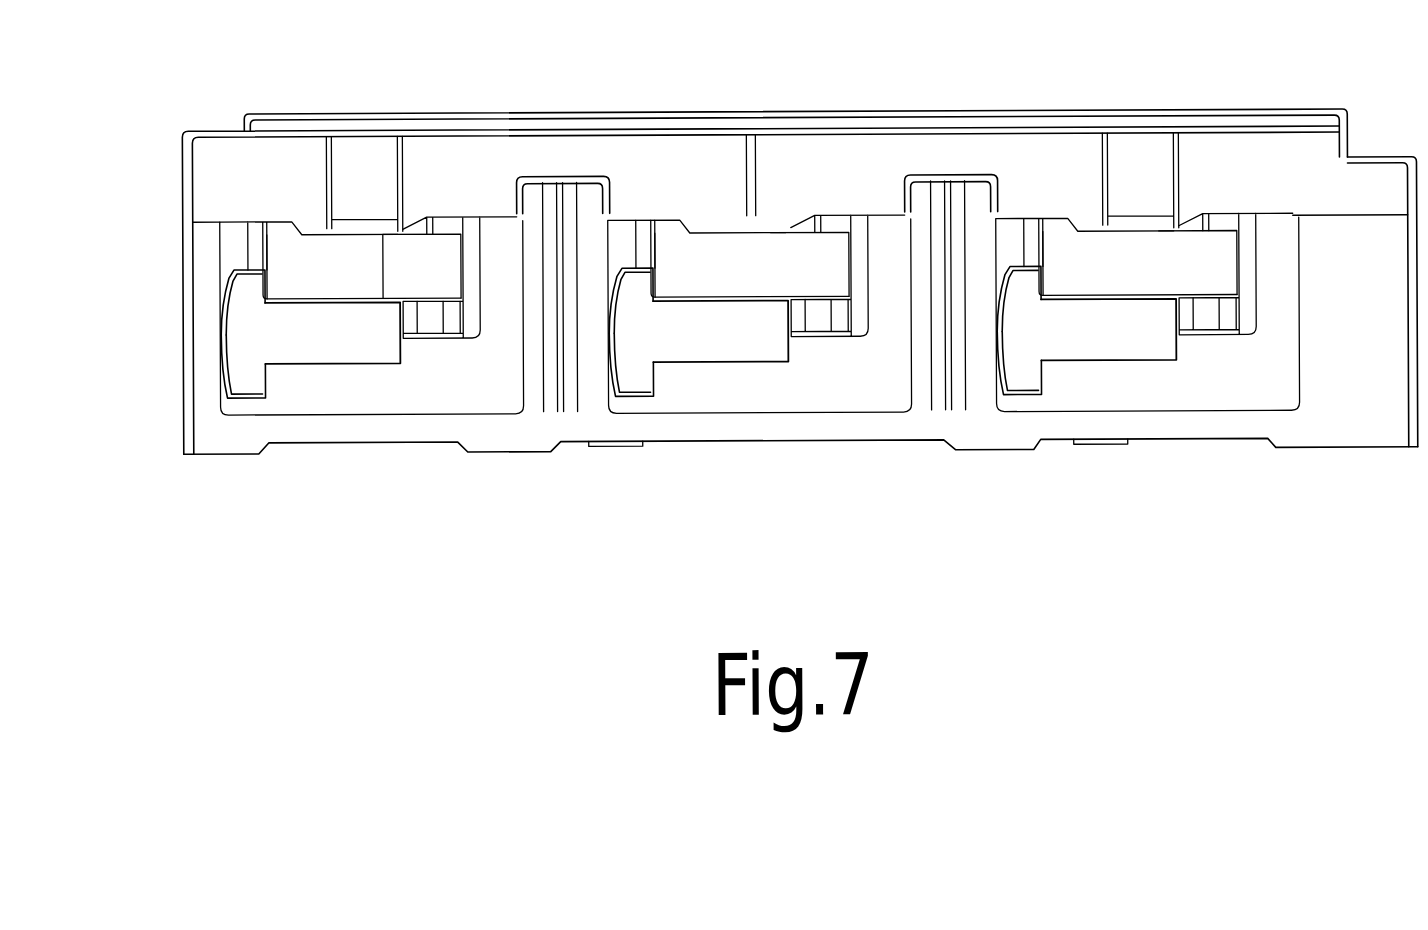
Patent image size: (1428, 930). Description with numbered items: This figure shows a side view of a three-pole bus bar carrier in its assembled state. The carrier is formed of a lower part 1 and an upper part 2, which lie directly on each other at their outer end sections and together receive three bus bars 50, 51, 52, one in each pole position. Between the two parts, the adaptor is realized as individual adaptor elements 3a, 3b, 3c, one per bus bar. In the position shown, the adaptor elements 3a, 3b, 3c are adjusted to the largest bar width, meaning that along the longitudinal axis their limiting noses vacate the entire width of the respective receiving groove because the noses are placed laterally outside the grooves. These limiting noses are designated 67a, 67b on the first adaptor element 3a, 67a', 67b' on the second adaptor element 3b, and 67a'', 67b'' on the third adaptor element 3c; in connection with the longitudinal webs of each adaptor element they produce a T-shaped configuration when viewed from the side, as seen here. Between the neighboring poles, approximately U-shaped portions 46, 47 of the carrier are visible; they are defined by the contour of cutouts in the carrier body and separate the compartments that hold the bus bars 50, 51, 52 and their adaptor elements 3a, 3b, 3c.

The lower part 1 is at (1358, 425).
The upper part 2 is at (1288, 163).
The adaptor element 3a is at (318, 340).
The adaptor element 3b is at (733, 339).
The adaptor element 3c is at (1108, 337).
The U-shaped portion 46 is at (585, 181).
The U-shaped portion 47 is at (969, 179).
The bus bar 50 is at (299, 273).
The bus bar 51 is at (750, 267).
The bus bar 52 is at (1127, 267).
The limiting nose 67a is at (165, 318).
The limiting nose 67b is at (172, 402).
The limiting nose 67a' is at (576, 404).
The limiting nose 67b' is at (650, 440).
The limiting nose 67a'' is at (977, 402).
The limiting nose 67b'' is at (1033, 442).